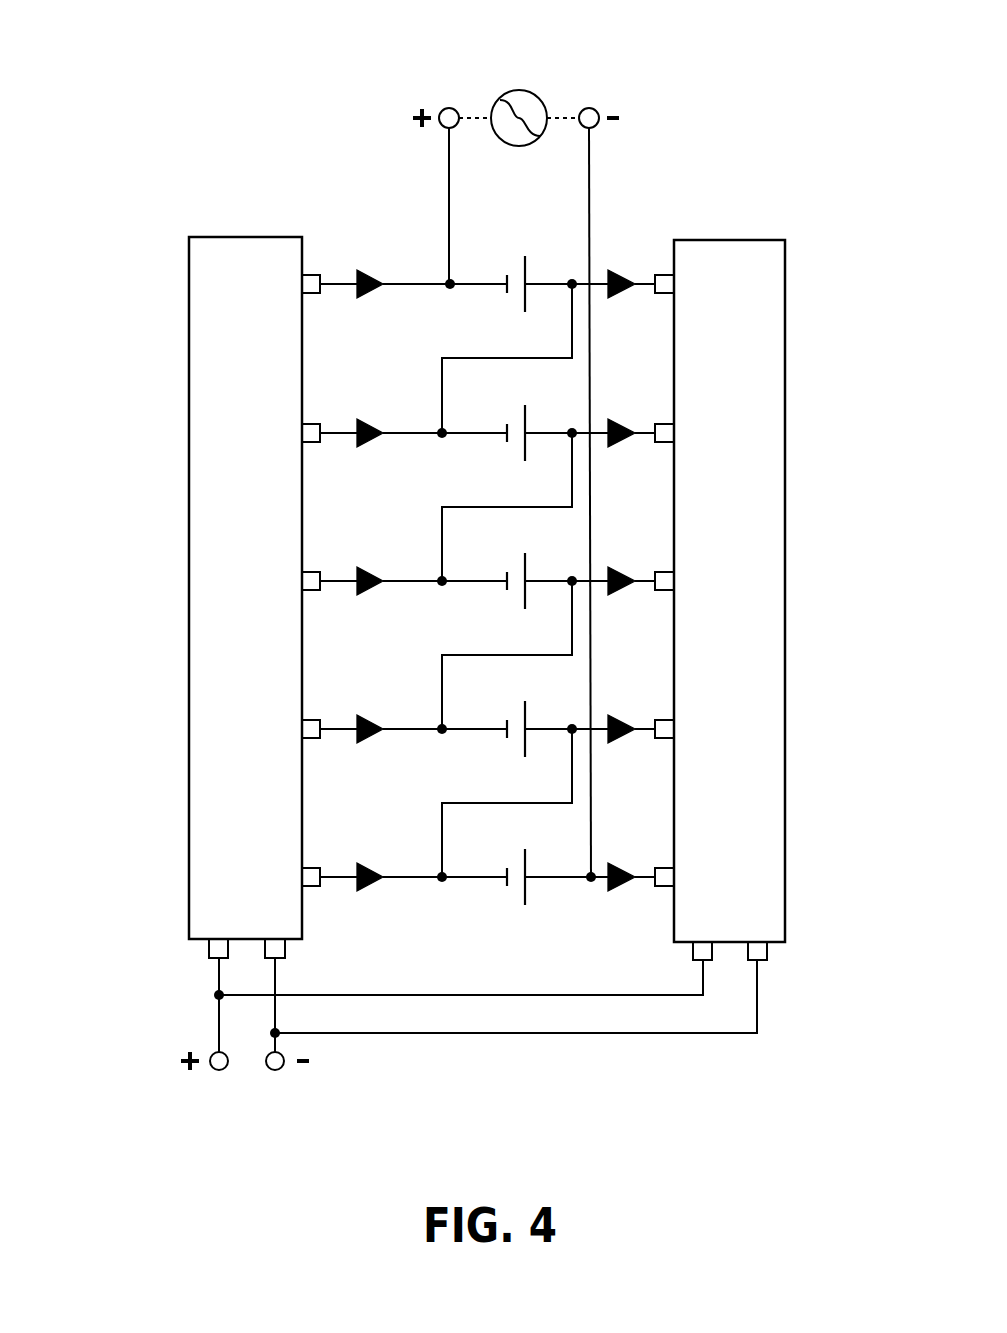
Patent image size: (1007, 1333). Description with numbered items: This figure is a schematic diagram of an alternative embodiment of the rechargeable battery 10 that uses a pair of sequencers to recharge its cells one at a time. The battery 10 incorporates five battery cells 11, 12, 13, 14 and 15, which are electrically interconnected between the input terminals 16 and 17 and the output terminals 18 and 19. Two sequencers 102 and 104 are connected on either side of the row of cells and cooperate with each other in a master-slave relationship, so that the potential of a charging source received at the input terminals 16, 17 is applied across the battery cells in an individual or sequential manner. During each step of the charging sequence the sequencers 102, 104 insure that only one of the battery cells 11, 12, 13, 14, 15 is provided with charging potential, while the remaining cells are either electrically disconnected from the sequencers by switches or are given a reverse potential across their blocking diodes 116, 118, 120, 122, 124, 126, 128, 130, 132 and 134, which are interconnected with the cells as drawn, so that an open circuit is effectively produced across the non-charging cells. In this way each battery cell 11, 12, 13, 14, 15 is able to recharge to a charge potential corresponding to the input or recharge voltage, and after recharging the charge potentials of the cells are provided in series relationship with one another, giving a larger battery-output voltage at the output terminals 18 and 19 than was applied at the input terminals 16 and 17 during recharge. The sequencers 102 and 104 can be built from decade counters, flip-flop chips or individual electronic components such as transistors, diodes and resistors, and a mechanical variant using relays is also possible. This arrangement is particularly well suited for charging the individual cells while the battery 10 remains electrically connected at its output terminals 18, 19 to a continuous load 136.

The rechargeable battery 10 is at (166, 80).
The battery cell 11 is at (538, 880).
The battery cell 12 is at (538, 732).
The battery cell 13 is at (538, 584).
The battery cell 14 is at (538, 436).
The battery cell 15 is at (538, 287).
The input terminal 16 is at (275, 1070).
The input terminal 17 is at (220, 1070).
The output terminal 18 is at (588, 107).
The output terminal 19 is at (450, 107).
The sequencer 102 is at (188, 588).
The sequencer 104 is at (786, 592).
The blocking diode 116 is at (378, 881).
The blocking diode 118 is at (628, 881).
The blocking diode 120 is at (378, 733).
The blocking diode 122 is at (628, 733).
The blocking diode 124 is at (378, 585).
The blocking diode 126 is at (628, 585).
The blocking diode 128 is at (378, 437).
The blocking diode 130 is at (628, 437).
The blocking diode 132 is at (378, 288).
The blocking diode 134 is at (628, 288).
The load 136 is at (518, 90).